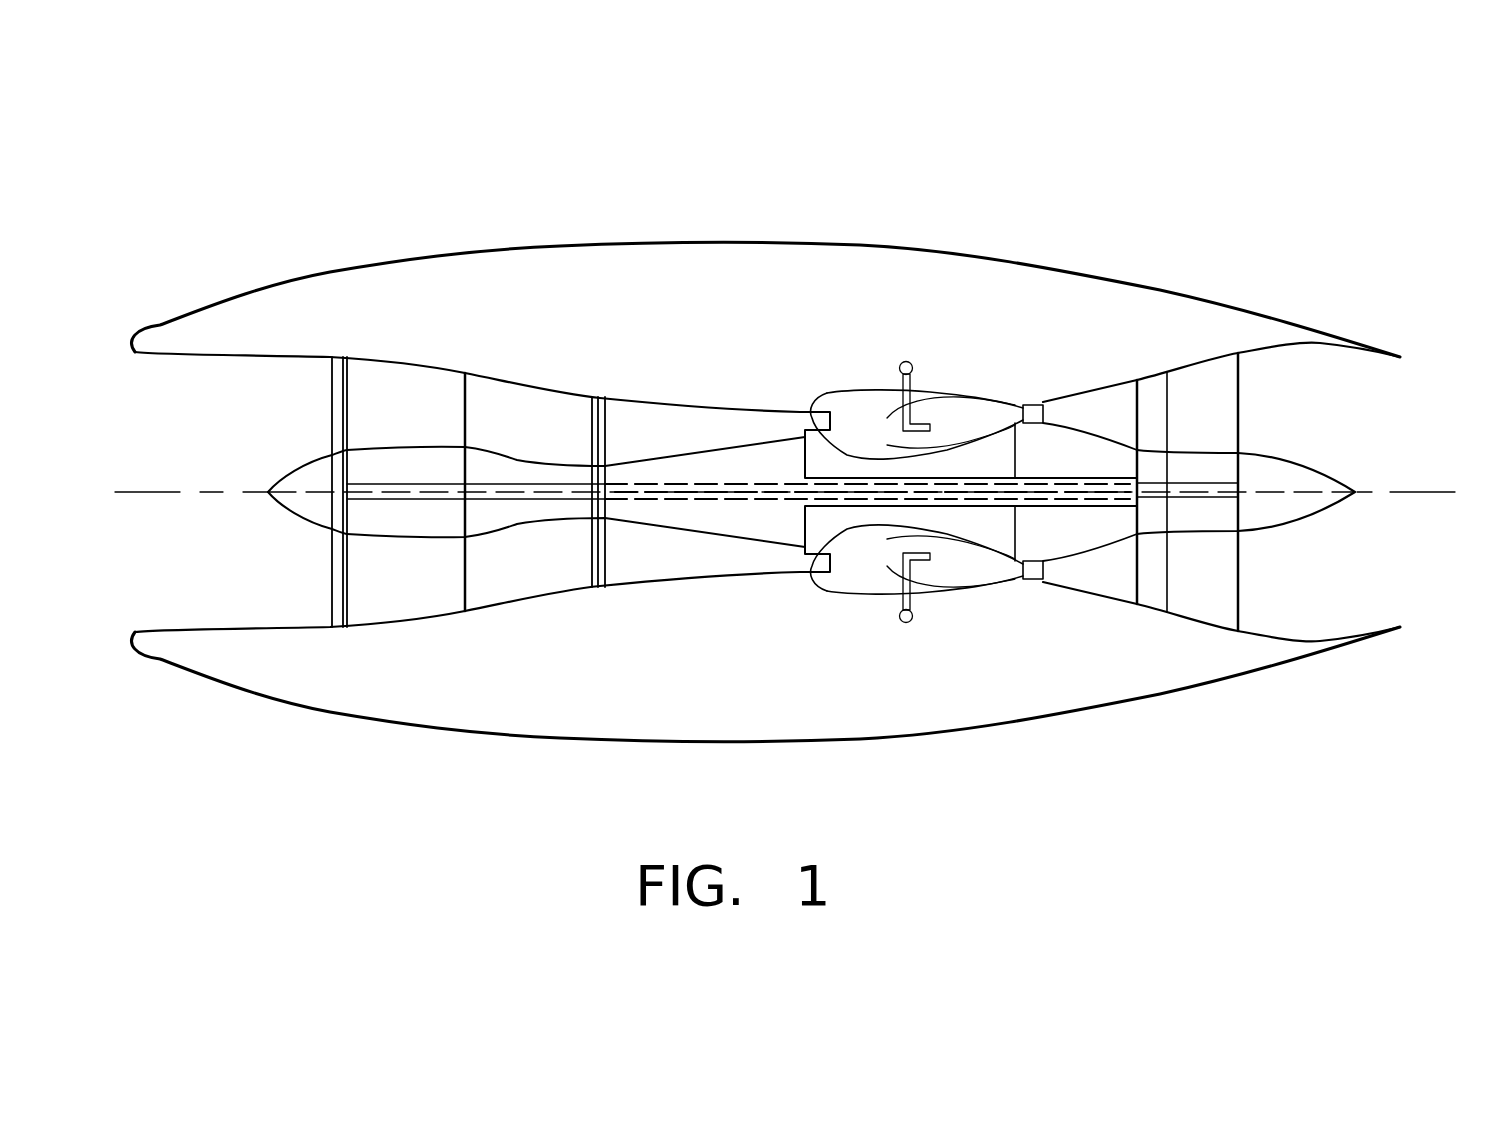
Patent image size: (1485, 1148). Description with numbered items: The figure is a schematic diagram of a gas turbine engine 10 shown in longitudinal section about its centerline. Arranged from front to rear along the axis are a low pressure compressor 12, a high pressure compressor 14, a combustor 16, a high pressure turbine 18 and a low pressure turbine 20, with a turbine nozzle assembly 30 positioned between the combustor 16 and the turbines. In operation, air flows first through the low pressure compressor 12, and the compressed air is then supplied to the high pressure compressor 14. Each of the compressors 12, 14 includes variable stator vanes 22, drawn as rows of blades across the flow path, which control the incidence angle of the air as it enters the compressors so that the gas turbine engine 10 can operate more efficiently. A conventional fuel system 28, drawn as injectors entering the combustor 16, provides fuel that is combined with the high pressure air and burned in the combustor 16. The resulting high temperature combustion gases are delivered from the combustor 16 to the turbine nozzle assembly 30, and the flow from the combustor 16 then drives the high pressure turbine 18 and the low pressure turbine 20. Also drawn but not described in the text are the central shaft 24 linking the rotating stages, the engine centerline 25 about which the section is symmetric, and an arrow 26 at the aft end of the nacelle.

The gas turbine engine 10 is at (343, 180).
The low pressure compressor 12 is at (395, 428).
The high pressure compressor 14 is at (668, 430).
The combustor 16 is at (953, 563).
The high pressure turbine 18 is at (1080, 407).
The low pressure turbine 20 is at (1183, 397).
The variable stator vanes 22 is at (335, 358).
The shaft 24 is at (387, 500).
The engine centerline axis 25 is at (213, 487).
The exhaust flow 26 is at (1374, 600).
The fuel system 28 is at (905, 622).
The turbine nozzle assembly 30 is at (1023, 407).